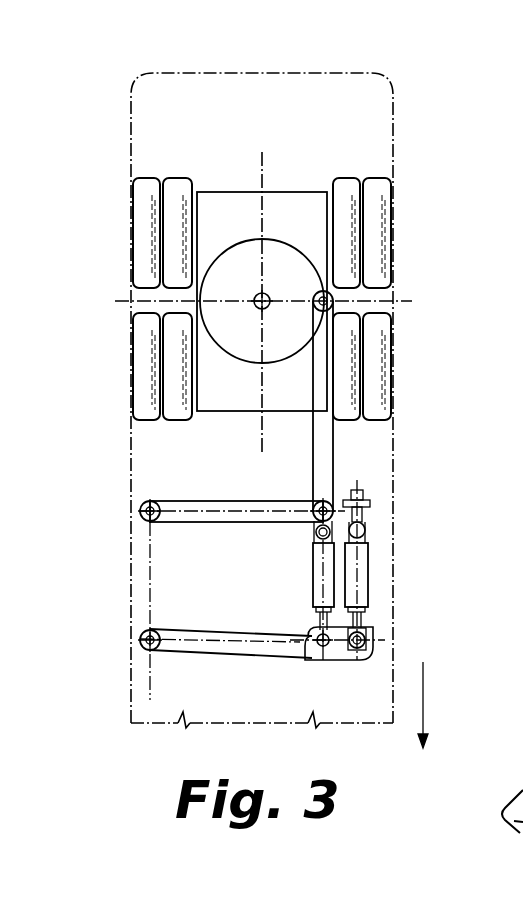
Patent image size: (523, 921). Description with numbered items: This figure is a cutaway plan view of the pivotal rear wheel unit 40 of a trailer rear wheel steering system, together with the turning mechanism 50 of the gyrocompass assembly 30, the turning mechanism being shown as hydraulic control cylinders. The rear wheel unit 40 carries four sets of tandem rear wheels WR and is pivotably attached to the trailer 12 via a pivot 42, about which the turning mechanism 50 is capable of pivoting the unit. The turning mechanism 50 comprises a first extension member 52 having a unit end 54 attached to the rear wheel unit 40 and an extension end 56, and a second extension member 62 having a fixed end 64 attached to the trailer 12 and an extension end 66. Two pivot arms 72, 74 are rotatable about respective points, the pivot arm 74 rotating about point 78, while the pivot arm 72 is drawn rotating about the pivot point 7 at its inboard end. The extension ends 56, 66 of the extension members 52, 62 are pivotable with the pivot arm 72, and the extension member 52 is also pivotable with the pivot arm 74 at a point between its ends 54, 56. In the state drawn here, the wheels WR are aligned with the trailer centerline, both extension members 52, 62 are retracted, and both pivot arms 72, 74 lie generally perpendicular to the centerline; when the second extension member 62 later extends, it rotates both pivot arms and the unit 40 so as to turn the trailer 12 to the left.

The trailer 12 is at (260, 73).
The pivotable rear wheel unit 40 is at (110, 326).
The pivot 42 is at (258, 295).
The tandem rear wheels WR is at (375, 227).
The unit end 54 is at (332, 303).
The turning mechanism 50 is at (327, 503).
The pivot arm 74 is at (202, 508).
The pivot point 78 is at (137, 507).
The extension member 52 is at (312, 593).
The second extension member 62 is at (360, 567).
The fixed end 64 is at (367, 528).
The extension end 66 is at (365, 637).
The extension end 56 is at (313, 662).
The pivot arm 72 is at (173, 653).
The lower link pivot 7 is at (143, 645).
The gyrocompass assembly 30 is at (414, 648).